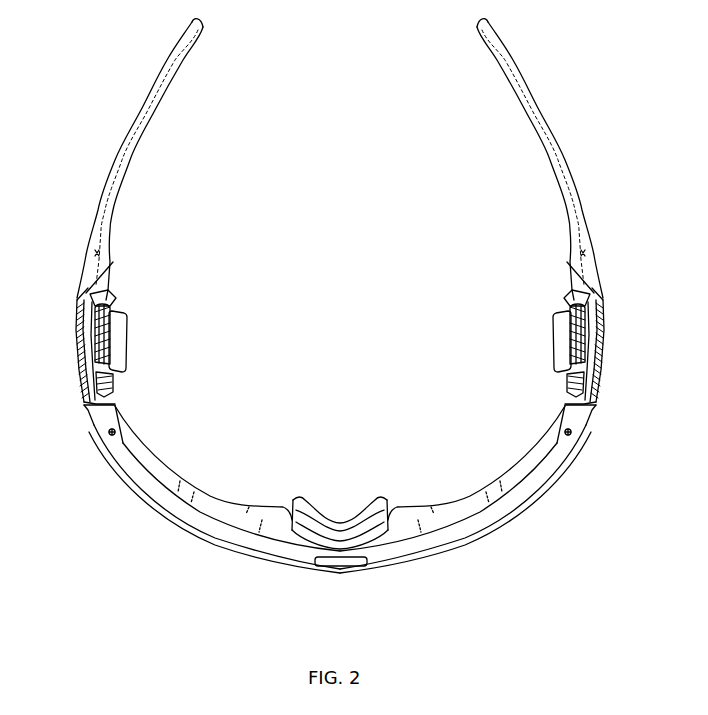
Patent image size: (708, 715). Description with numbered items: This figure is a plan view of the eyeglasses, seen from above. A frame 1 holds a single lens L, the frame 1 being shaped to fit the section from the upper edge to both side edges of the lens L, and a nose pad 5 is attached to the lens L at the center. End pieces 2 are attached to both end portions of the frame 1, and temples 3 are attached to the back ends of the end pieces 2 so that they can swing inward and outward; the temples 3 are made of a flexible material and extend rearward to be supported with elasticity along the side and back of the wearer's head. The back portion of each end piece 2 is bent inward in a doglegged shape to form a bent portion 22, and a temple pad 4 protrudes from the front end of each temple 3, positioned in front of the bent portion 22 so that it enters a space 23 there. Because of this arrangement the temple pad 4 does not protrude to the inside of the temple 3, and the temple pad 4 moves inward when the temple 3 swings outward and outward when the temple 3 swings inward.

The frame 1 is at (197, 535).
The end piece 2 is at (75, 362).
The temple 3 is at (157, 76).
The temple pad 4 is at (128, 338).
The nose pad 5 is at (312, 500).
The bent portion 22 is at (118, 297).
The space 23 is at (114, 382).
The lens L is at (472, 490).